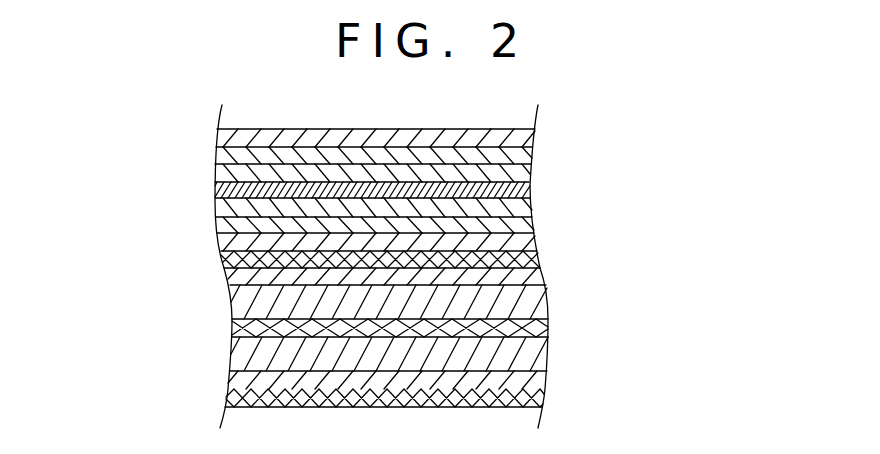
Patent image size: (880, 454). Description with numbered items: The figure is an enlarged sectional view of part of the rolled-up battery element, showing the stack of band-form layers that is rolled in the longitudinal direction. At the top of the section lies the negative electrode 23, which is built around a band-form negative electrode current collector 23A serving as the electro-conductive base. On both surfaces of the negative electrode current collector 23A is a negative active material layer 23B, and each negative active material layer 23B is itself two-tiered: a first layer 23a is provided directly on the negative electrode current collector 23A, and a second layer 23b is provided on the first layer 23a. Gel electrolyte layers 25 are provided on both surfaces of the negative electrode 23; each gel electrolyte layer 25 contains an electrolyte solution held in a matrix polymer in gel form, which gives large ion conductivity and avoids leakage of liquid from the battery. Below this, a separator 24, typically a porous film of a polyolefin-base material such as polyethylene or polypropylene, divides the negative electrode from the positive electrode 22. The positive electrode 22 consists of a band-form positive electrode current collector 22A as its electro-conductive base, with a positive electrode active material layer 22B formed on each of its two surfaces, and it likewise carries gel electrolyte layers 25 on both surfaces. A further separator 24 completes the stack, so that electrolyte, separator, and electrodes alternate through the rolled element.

The positive electrode 22 is at (300, 331).
The positive electrode current collector 22A is at (228, 328).
The positive electrode active material layer 22B is at (226, 303).
The negative electrode 23 is at (489, 180).
The negative electrode current collector 23A is at (527, 189).
The negative active material layer 23B is at (458, 180).
The first layer 23a is at (522, 171).
The second layer 23b is at (522, 153).
The separator 24 is at (220, 260).
The gel electrolyte layer 25 is at (217, 138).